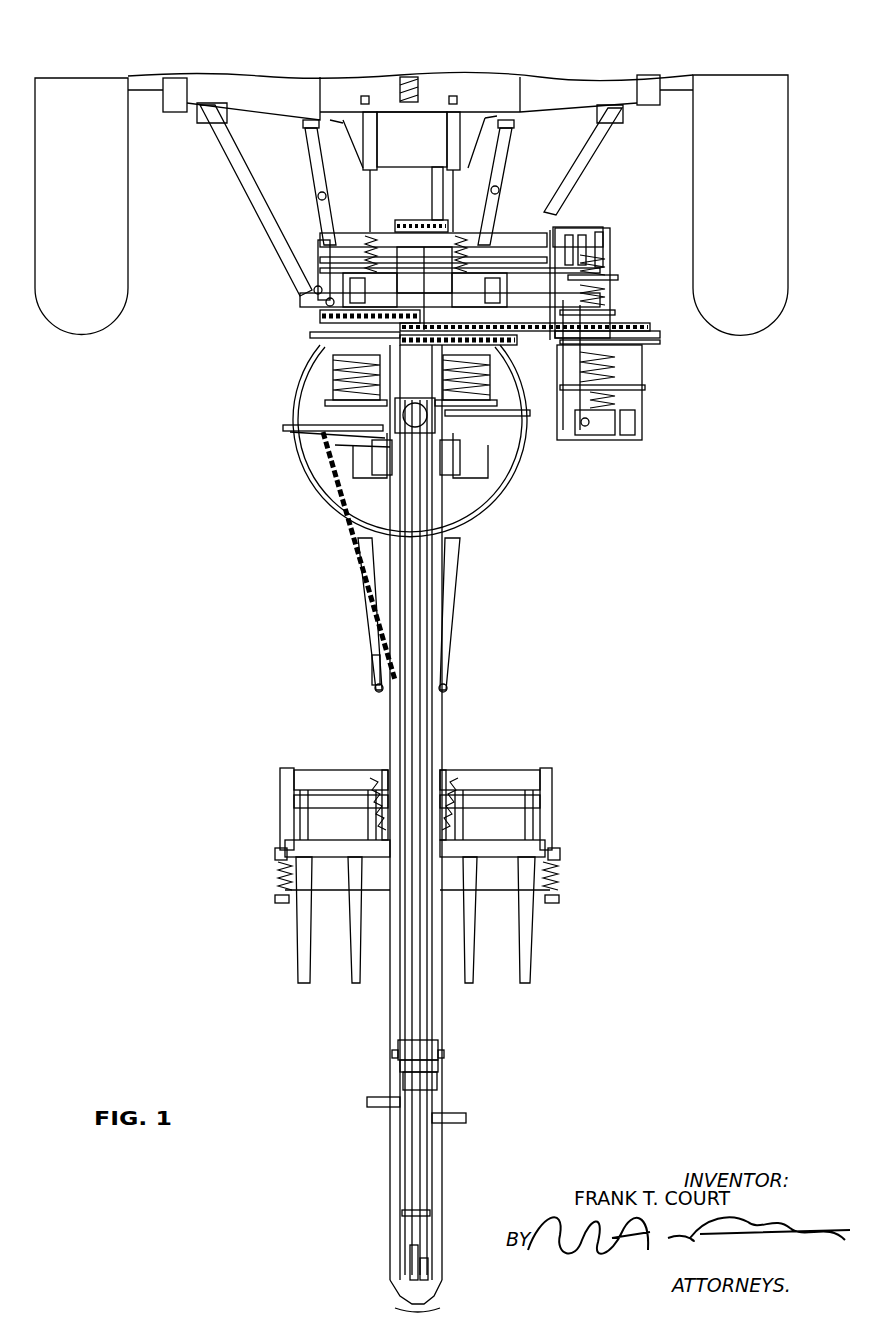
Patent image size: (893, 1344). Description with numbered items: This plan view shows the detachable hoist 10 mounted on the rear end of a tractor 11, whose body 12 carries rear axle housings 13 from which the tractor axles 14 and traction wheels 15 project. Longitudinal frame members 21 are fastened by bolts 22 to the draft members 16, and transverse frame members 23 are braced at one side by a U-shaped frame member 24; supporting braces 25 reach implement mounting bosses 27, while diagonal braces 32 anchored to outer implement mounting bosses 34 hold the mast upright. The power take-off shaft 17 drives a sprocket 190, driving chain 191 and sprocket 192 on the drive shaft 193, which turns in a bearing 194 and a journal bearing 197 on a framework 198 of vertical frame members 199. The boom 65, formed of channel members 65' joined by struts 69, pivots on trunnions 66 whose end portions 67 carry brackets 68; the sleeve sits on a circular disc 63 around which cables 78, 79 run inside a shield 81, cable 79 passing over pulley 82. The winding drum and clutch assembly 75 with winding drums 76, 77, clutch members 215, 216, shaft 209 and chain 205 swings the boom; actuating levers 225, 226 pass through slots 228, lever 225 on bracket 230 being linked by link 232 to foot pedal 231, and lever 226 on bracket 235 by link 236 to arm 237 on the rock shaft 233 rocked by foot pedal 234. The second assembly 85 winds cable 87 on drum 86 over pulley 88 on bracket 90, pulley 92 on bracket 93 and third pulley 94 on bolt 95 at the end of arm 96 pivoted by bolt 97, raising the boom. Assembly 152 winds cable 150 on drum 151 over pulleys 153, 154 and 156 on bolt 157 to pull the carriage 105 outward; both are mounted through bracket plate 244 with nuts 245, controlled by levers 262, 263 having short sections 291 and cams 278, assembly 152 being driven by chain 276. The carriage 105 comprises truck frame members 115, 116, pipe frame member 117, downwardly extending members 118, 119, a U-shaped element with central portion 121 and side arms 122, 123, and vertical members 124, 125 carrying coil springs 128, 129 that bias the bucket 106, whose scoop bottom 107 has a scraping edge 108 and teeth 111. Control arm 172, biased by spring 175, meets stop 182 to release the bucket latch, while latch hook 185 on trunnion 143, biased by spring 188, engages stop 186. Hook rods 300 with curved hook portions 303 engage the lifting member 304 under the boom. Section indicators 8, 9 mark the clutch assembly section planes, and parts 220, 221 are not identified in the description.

The section line 8 is at (330, 242).
The section line 9 is at (455, 242).
The detachable hoist 10 is at (240, 306).
The tractor 11 is at (225, 233).
The body 12 is at (486, 80).
The rear axle housings 13 is at (256, 74).
The tractor axles 14 is at (150, 92).
The traction wheels 15 is at (128, 192).
The draft members 16 is at (322, 140).
The power take-off shaft 17 is at (432, 190).
The longitudinal frame members 21 is at (348, 200).
The bolts 22 is at (318, 200).
The transverse frame members 23 is at (505, 230).
The U-shaped frame member 24 is at (612, 370).
The supporting braces 25 is at (322, 215).
The implement mounting bosses 27 is at (312, 127).
The diagonal braces 32 is at (240, 180).
The outer implement mounting bosses 34 is at (207, 120).
The circular disc 63 is at (522, 472).
The boom 65 is at (467, 714).
The channel members 65' is at (416, 726).
The trunnions 66 is at (372, 476).
The end portions 67 is at (462, 446).
The brackets 68 is at (385, 502).
The transverse interconnecting struts 69 is at (402, 748).
The winding drum and clutch assembly 75 is at (630, 310).
The winding drum 76 is at (612, 300).
The winding drum 77 is at (600, 355).
The cable 78 is at (530, 330).
The cable 79 is at (585, 368).
The shield 81 is at (492, 505).
The pulley 82 is at (325, 324).
The second winding drum and clutch assembly 85 is at (490, 375).
The cable winding drum 86 is at (500, 352).
The cable 87 is at (425, 372).
The pulley 88 is at (472, 462).
The bracket 90 is at (440, 427).
The pulley 92 is at (420, 1036).
The bracket 93 is at (430, 1082).
The third pulley 94 is at (380, 680).
The bolt 95 is at (378, 660).
The arm 96 is at (420, 605).
The bolt 97 is at (340, 457).
The carriage 105 is at (560, 766).
The material handling bucket 106 is at (540, 940).
The scoop bottom 107 is at (335, 895).
The forward scraping edge 108 is at (376, 895).
The teeth 111 is at (352, 960).
The truck frame member 115 is at (380, 835).
The truck frame member 116 is at (456, 845).
The pipe frame member 117 is at (300, 830).
The downwardly extending frame member 118 is at (372, 775).
The downwardly extending frame member 119 is at (448, 777).
The central portion 121 is at (300, 775).
The side arm 122 is at (283, 792).
The side arm 123 is at (548, 812).
The vertically disposed frame member 124 is at (280, 850).
The vertically disposed frame member 125 is at (552, 848).
The coil spring 128 is at (278, 880).
The coil spring 129 is at (552, 880).
The trunnion 143 is at (460, 778).
The cable 150 is at (400, 385).
The winding drum 151 is at (335, 365).
The combined clutch and winding drum assembly 152 is at (325, 385).
The pulley 153 is at (340, 446).
The pulley 154 is at (408, 542).
The pulley 156 is at (418, 1250).
The transverse bolt 157 is at (426, 1266).
The control arm 172 is at (368, 778).
The tension spring 175 is at (372, 800).
The stop member 182 is at (375, 1107).
The latch hook 185 is at (456, 825).
The stop 186 is at (466, 1118).
The spring 188 is at (456, 800).
The sprocket 190 is at (442, 205).
The driving chain 191 is at (410, 222).
The sprocket 192 is at (398, 226).
The drive shaft 193 is at (435, 283).
The bearing 194 is at (422, 390).
The journal bearing 197 is at (388, 283).
The framework 198 is at (488, 258).
The vertical frame members 199 is at (312, 252).
The chain 205 is at (498, 328).
The shaft 209 is at (598, 258).
The clutch member 215 is at (625, 342).
The clutch member 216 is at (625, 330).
The spring 220 is at (612, 390).
The plate 221 is at (608, 290).
The actuating lever 225 is at (575, 235).
The actuating lever 226 is at (582, 424).
The slot 228 is at (605, 268).
The bracket 230 is at (595, 240).
The foot-operated pedal 231 is at (600, 300).
The link 232 is at (548, 228).
The rock shaft 233 is at (520, 265).
The foot pedal 234 is at (320, 302).
The bracket 235 is at (615, 422).
The link 236 is at (560, 418).
The arm 237 is at (490, 276).
The bracket plate 244 is at (395, 405).
The nuts 245 is at (470, 412).
The control lever 262 is at (450, 342).
The control lever 263 is at (320, 275).
The power transmitting chain 276 is at (375, 342).
The cam 278 is at (330, 330).
The short section 291 is at (315, 290).
The hook 300 is at (448, 625).
The curved hook portions 303 is at (446, 688).
The transverse lifting member 304 is at (458, 556).